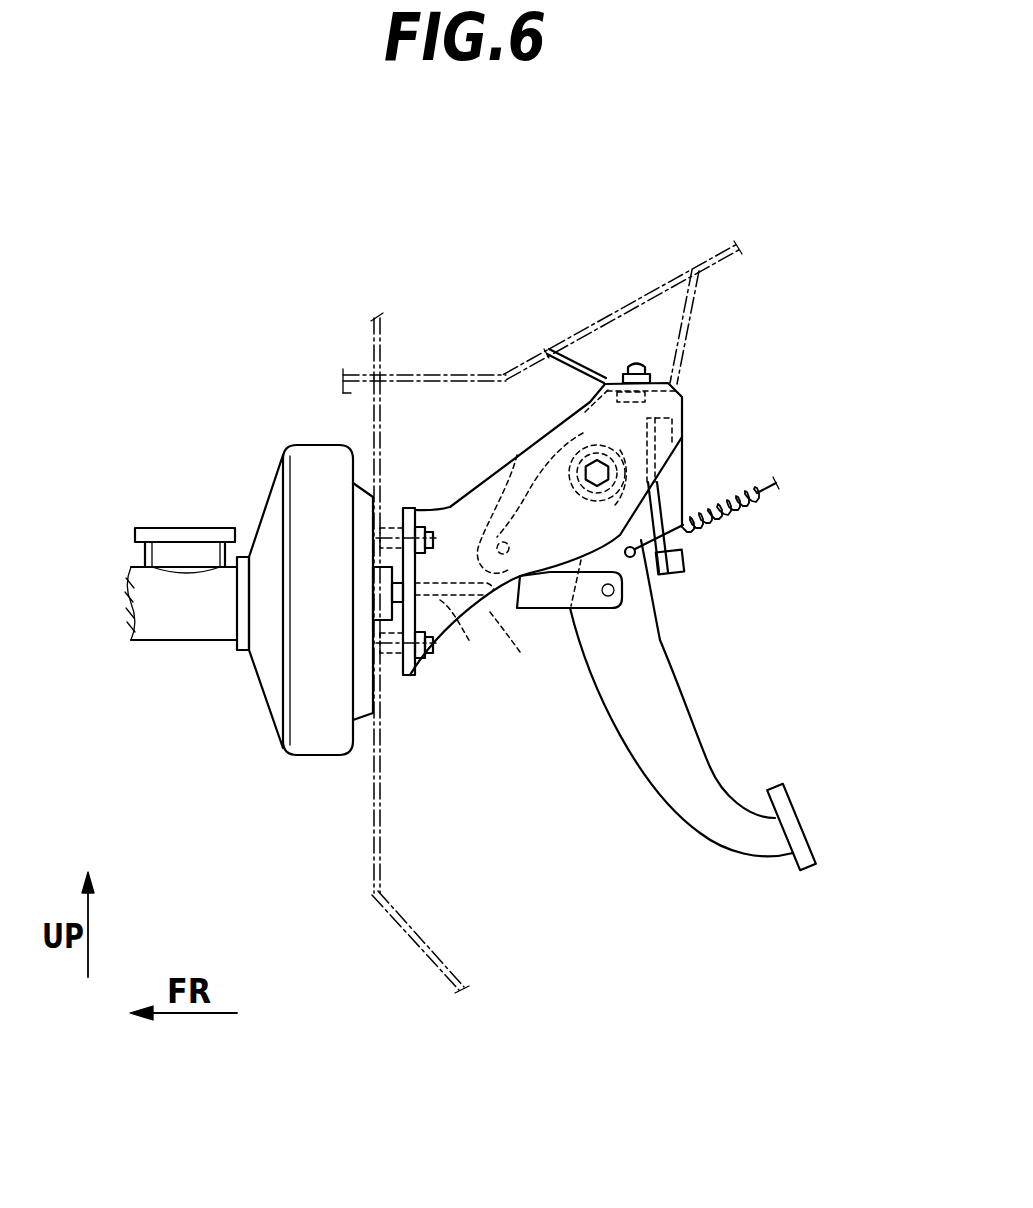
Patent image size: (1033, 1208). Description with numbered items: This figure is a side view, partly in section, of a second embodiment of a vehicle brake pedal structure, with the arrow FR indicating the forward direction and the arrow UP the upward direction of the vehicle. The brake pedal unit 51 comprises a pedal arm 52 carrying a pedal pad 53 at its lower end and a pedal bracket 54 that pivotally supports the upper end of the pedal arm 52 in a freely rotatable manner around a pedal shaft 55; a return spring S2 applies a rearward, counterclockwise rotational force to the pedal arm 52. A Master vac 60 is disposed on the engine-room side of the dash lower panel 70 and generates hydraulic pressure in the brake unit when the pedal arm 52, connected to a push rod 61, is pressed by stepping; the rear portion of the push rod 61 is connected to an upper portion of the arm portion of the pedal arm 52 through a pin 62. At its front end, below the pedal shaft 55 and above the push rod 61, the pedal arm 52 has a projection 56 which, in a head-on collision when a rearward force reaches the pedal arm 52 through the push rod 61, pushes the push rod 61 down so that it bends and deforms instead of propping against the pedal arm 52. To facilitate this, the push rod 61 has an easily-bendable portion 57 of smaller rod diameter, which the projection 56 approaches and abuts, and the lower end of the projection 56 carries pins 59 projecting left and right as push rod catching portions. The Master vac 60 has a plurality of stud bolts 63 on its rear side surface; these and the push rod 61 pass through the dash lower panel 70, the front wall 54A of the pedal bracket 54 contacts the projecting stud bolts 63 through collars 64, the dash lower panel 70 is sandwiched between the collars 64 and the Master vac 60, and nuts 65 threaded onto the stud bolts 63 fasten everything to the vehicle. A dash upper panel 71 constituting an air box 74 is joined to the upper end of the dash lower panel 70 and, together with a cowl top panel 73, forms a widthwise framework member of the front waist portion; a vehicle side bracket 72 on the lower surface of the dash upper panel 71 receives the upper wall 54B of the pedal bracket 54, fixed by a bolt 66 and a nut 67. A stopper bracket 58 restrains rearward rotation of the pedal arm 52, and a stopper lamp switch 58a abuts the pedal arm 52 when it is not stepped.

The brake pedal unit 51 is at (720, 705).
The pedal arm 52 is at (713, 767).
The pedal pad 53 is at (793, 803).
The pedal bracket 54 is at (684, 445).
The front wall 54A is at (375, 567).
The upper wall 54B is at (684, 399).
The pedal shaft 55 is at (598, 482).
The projection 56 is at (483, 571).
The easily-bendable portion 57 is at (517, 623).
The stopper bracket 58 is at (667, 477).
The stopper lamp switch 58a is at (687, 551).
The pins 59 is at (517, 455).
The Master vac 60 is at (296, 766).
The push rod 61 is at (470, 620).
The pin 62 is at (608, 596).
The stud bolts 63 is at (415, 510).
The collars 64 is at (386, 527).
The nuts 65 is at (421, 527).
The bolt 66 is at (684, 425).
The nut 67 is at (645, 362).
The dash lower panel 70 is at (374, 862).
The dash upper panel 71 is at (505, 381).
The vehicle side bracket 72 is at (697, 300).
The cowl top panel 73 is at (374, 335).
The air box 74 is at (479, 306).
The return spring S2 is at (742, 507).